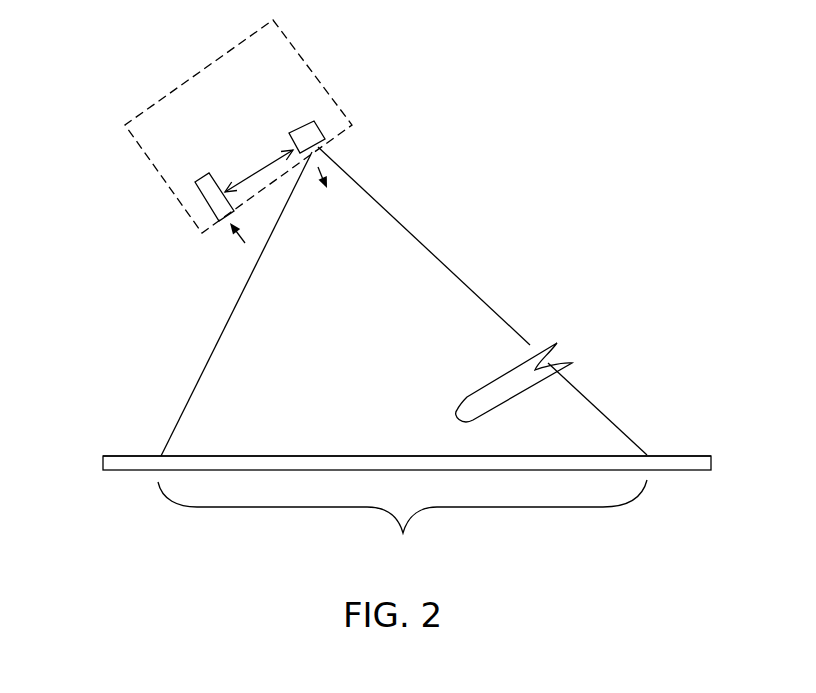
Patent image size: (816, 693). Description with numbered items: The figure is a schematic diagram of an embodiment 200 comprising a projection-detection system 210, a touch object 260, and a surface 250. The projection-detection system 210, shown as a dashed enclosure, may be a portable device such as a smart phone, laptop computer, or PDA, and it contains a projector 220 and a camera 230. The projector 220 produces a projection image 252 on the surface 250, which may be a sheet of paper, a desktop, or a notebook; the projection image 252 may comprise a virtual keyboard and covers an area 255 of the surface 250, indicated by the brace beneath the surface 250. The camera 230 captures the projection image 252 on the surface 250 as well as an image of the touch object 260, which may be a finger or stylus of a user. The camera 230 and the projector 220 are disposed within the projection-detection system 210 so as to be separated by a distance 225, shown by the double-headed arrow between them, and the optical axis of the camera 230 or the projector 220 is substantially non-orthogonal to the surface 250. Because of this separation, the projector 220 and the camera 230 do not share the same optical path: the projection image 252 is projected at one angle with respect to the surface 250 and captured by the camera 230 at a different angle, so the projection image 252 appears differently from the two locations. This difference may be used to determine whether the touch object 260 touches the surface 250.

The embodiment 200 is at (617, 179).
The projection-detection system 210 is at (147, 160).
The projector 220 is at (316, 121).
The distance 225 is at (266, 157).
The camera 230 is at (203, 207).
The surface 250 is at (670, 454).
The projection image 252 is at (354, 444).
The area 255 is at (402, 521).
The touch object 260 is at (493, 381).